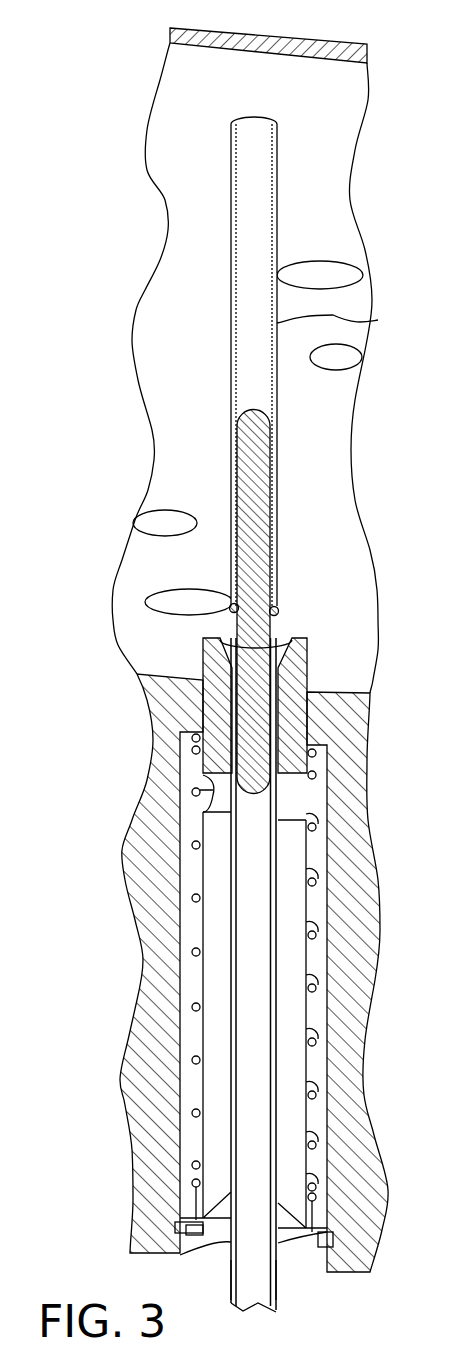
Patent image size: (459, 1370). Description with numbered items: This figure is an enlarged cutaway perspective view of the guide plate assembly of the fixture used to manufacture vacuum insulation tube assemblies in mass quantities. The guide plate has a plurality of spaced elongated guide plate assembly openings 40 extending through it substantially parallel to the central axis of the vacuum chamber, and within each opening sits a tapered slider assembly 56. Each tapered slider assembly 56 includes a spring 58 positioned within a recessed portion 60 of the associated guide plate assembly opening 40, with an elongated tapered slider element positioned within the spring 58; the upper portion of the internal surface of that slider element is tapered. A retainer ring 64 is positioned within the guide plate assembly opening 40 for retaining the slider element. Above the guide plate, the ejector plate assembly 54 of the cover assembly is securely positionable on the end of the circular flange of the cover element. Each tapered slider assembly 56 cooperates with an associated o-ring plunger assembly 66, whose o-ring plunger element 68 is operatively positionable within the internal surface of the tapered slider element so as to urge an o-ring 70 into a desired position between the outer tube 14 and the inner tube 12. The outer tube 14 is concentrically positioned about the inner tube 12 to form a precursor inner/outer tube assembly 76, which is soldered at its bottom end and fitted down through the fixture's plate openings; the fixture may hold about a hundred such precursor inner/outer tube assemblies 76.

The ejector plate assembly 54 is at (171, 33).
The o-ring plunger assembly 66 is at (231, 237).
The o-ring plunger element 68 is at (378, 320).
The guide plate assembly opening 40 is at (163, 517).
The o-ring 70 is at (283, 612).
The tapered slider assembly 56 is at (310, 707).
The recessed portion 60 is at (313, 755).
The spring 58 is at (318, 817).
The outer tube 14 is at (228, 1035).
The inner tube 12 is at (231, 1097).
The precursor inner/outer tube assembly 76 is at (230, 1275).
The retainer ring 64 is at (320, 1247).